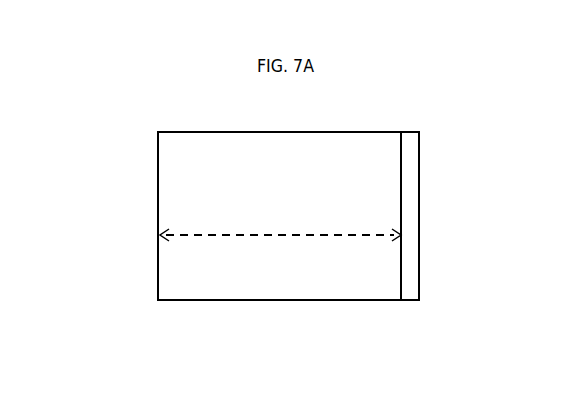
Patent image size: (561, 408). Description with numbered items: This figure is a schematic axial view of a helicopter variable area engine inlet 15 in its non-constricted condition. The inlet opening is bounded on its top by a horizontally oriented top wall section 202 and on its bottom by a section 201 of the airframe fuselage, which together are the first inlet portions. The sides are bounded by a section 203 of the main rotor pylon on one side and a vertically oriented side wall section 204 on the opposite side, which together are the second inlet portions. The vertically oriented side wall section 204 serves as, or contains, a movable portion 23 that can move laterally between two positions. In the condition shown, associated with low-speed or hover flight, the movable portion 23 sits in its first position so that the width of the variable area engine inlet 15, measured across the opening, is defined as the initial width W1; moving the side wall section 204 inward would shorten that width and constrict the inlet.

The variable area engine inlet 15 is at (336, 180).
The movable portion 23 is at (461, 216).
The vertically oriented side wall section 204 is at (421, 240).
The horizontally oriented top wall section 202 is at (377, 121).
The section of fuselage 201 is at (357, 311).
The section of main rotor pylon 203 is at (156, 206).
The initial width W1 is at (200, 237).